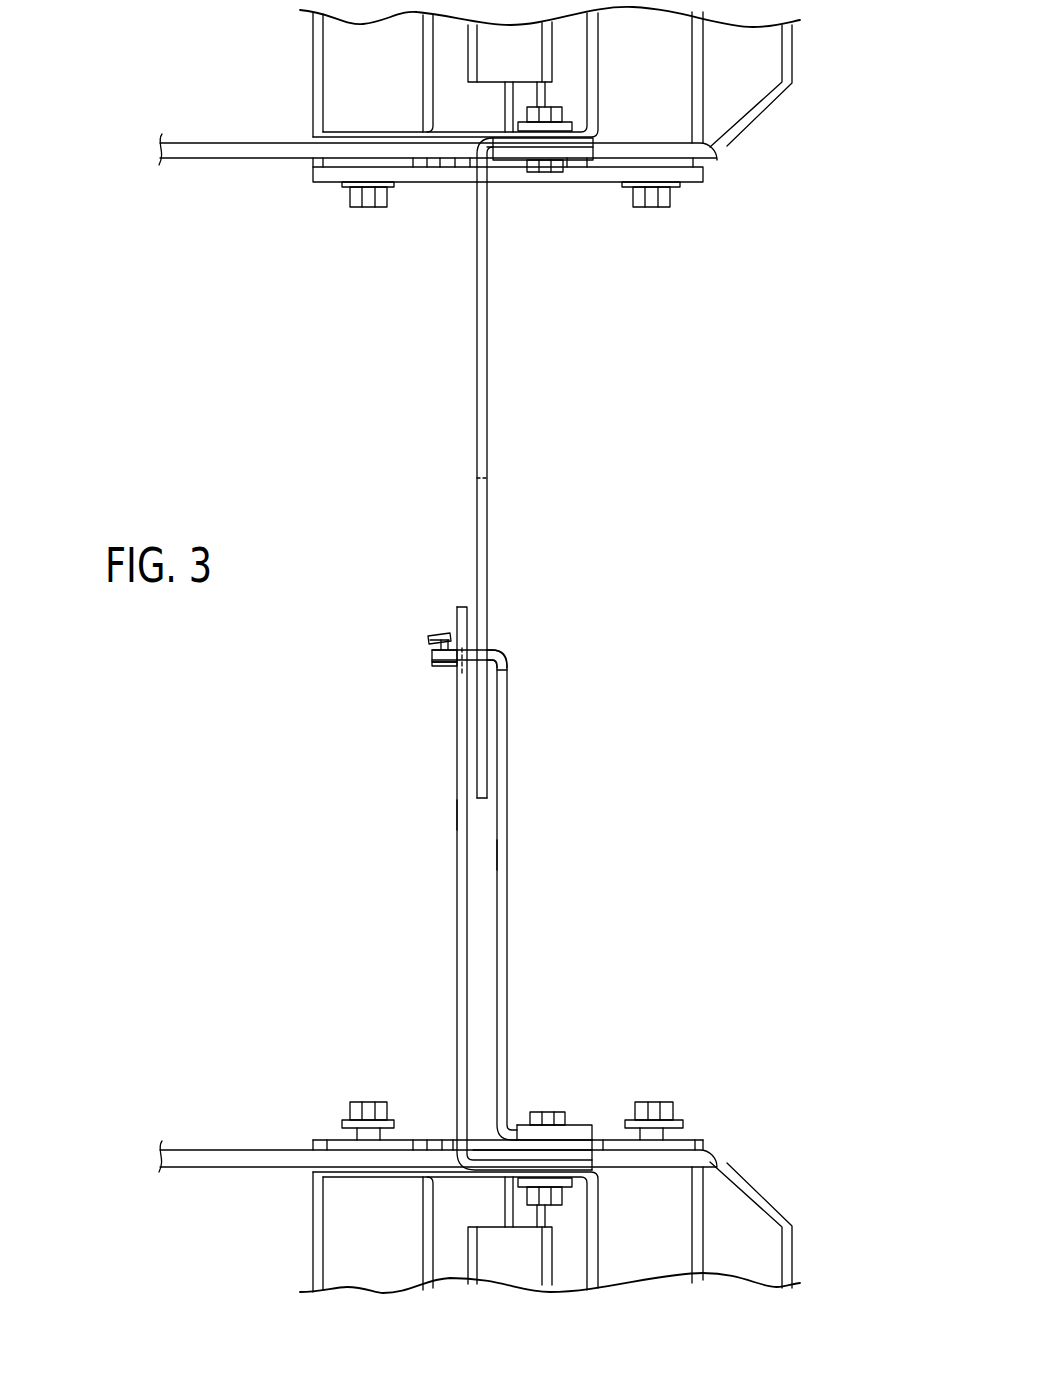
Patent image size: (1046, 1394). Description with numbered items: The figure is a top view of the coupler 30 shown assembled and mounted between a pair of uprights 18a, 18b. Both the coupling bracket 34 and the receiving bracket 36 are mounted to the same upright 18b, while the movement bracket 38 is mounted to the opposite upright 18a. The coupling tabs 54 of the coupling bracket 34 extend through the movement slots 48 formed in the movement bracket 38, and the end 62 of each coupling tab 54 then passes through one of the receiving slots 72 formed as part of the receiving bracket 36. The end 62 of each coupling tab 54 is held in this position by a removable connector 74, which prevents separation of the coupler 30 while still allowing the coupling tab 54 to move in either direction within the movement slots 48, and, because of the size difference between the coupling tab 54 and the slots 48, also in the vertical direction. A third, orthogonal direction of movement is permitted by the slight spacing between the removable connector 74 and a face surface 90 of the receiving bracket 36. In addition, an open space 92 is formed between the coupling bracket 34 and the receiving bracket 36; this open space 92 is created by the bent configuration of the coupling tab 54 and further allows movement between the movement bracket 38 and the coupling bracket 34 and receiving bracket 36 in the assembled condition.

The upright 18a is at (660, 103).
The upright 18b is at (676, 1187).
The coupler 30 is at (522, 585).
The coupling bracket 34 is at (507, 950).
The receiving bracket 36 is at (458, 950).
The movement bracket 38 is at (487, 352).
The movement slot 48 is at (483, 516).
The coupling tab 54 is at (498, 652).
The end of coupling tab 62 is at (432, 658).
The receiving slot 72 is at (458, 674).
The removable connector 74 is at (447, 633).
The face surface 90 is at (457, 814).
The open space 92 is at (486, 853).